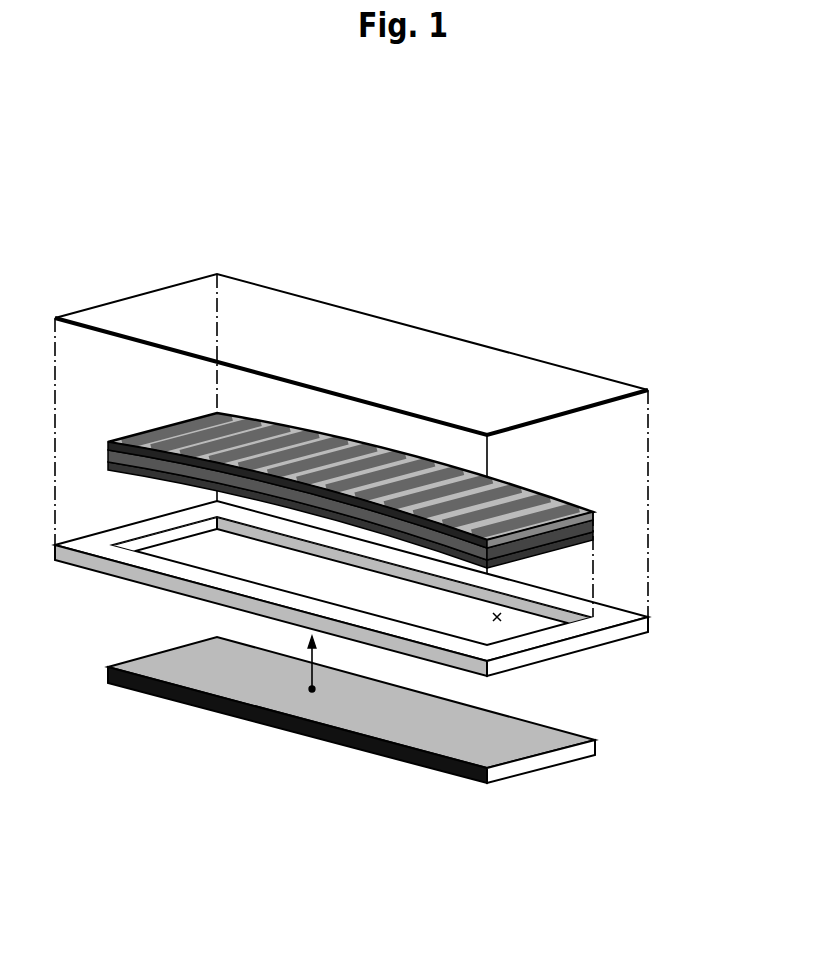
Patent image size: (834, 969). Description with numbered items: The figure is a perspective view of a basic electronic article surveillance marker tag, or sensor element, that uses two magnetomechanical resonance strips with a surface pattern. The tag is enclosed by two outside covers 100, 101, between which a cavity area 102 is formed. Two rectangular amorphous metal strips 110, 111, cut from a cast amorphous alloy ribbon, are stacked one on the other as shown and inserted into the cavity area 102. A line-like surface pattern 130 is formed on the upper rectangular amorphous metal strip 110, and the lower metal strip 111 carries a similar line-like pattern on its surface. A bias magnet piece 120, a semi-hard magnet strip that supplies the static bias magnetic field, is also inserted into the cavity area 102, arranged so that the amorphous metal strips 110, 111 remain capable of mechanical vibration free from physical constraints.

The outside cover 100 is at (585, 400).
The line-like surface pattern 130 is at (522, 508).
The rectangular amorphous metal strip 110 is at (595, 515).
The rectangular amorphous metal strip 111 is at (595, 529).
The outside cover 101 is at (430, 611).
The cavity area 102 is at (499, 618).
The bias magnet piece 120 is at (547, 768).